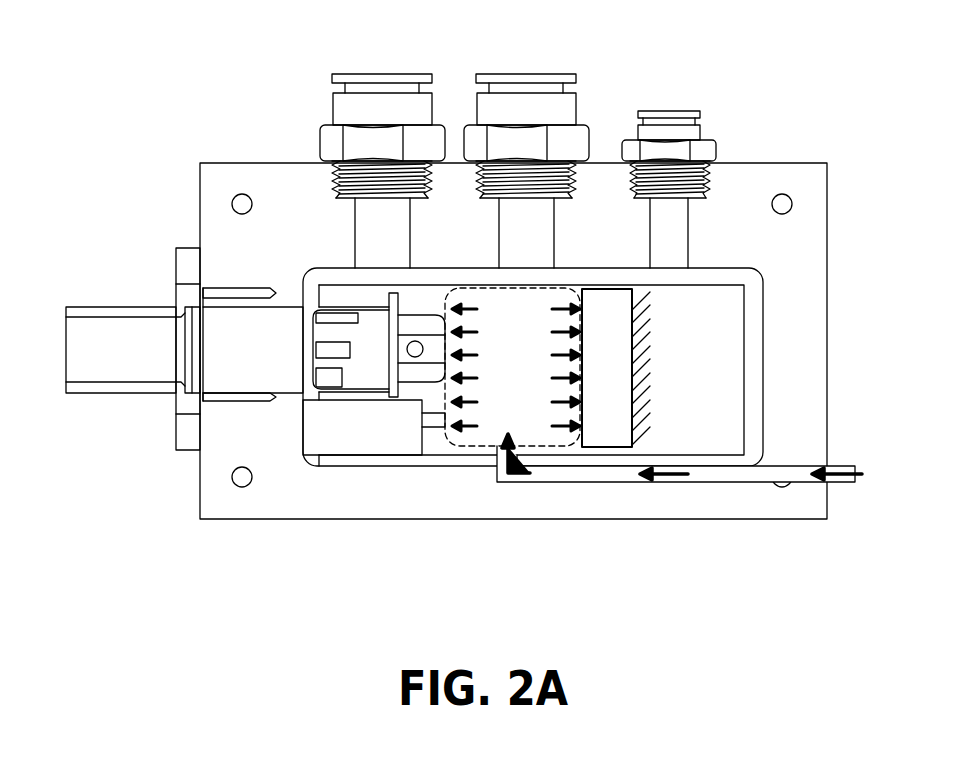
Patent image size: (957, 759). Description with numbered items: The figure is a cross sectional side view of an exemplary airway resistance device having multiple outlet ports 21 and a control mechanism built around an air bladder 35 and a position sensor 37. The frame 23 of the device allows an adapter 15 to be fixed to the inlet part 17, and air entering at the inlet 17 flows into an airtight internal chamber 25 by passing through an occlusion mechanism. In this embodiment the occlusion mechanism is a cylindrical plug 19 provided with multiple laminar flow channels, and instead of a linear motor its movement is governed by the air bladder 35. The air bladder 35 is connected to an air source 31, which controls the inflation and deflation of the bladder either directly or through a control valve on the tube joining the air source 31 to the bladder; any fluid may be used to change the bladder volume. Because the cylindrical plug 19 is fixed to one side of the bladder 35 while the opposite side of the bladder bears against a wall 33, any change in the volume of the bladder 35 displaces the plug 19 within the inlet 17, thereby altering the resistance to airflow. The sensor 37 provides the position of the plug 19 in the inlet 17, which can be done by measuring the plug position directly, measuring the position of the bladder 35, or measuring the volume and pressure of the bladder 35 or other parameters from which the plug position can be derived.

The adapter 15 is at (101, 306).
The inlet part 17 is at (242, 288).
The cylindrical plug 19 is at (360, 383).
The outlet ports 21 is at (380, 74).
The frame 23 is at (763, 161).
The airtight internal chamber 25 is at (755, 360).
The air source 31 is at (843, 483).
The wall 33 is at (610, 439).
The air bladder 35 is at (470, 437).
The position sensor 37 is at (378, 438).